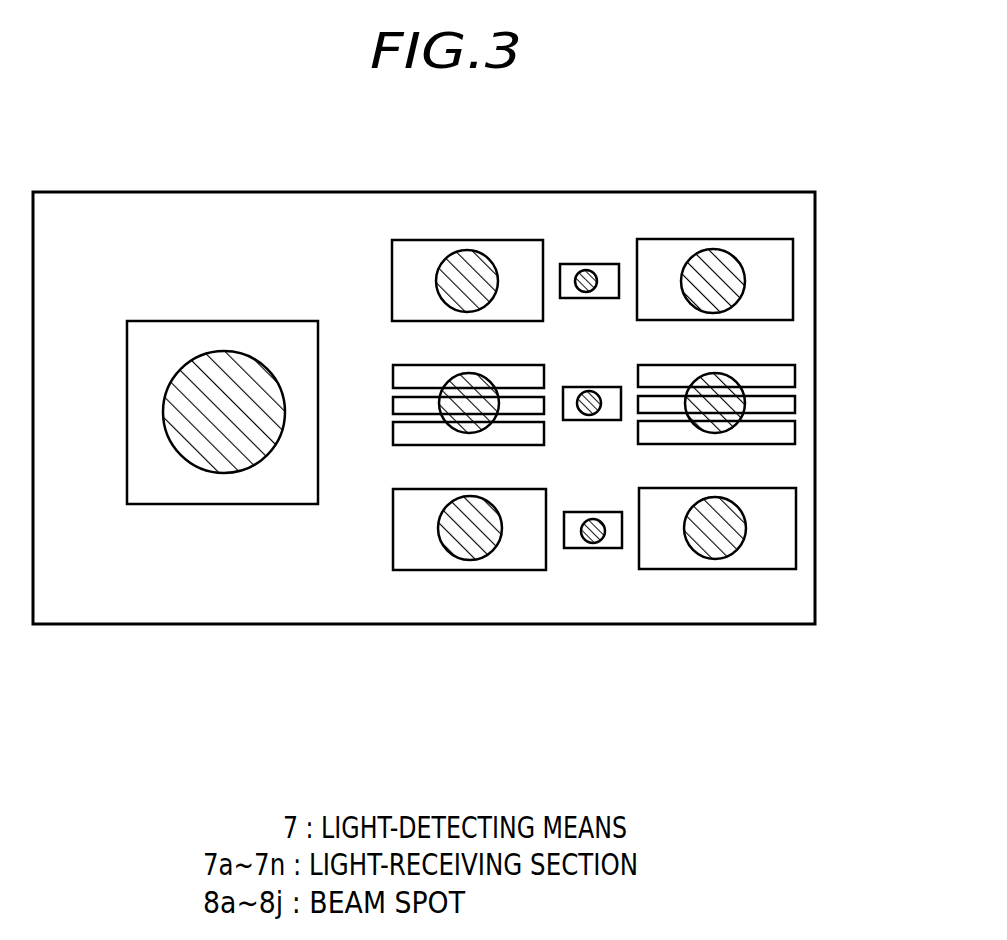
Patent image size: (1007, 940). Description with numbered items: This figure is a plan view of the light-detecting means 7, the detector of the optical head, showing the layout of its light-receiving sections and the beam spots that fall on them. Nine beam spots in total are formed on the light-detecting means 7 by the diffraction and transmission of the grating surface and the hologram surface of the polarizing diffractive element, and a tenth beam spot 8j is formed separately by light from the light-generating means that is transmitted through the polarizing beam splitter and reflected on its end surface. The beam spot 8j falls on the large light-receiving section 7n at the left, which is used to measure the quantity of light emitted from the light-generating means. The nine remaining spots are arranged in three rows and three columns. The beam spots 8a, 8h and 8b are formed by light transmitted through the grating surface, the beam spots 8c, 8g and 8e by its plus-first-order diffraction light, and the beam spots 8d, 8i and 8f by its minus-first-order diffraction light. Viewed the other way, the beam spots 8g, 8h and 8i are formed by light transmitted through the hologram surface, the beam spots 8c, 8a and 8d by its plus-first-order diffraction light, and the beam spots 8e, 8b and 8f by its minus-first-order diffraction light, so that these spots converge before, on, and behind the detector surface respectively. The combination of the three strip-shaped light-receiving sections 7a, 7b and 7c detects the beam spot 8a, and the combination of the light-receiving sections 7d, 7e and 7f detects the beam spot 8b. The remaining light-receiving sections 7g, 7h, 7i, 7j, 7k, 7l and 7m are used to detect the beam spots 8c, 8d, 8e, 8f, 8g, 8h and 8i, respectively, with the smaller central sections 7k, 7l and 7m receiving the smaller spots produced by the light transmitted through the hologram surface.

The light-detecting means 7 is at (177, 186).
The light-receiving section 7a is at (787, 373).
The light-receiving section 7b is at (787, 403).
The light-receiving section 7c is at (787, 431).
The light-receiving section 7d is at (405, 370).
The light-receiving section 7e is at (402, 403).
The light-receiving section 7f is at (402, 433).
The light-receiving section 7g is at (779, 263).
The light-receiving section 7h is at (778, 538).
The light-receiving section 7i is at (413, 262).
The light-receiving section 7j is at (412, 555).
The light-receiving section 7k is at (570, 272).
The light-receiving section 7l is at (603, 385).
The light-receiving section 7m is at (610, 542).
The light-receiving section 7n is at (146, 338).
The beam spot 8a is at (733, 428).
The beam spot 8b is at (465, 428).
The beam spot 8c is at (718, 268).
The beam spot 8d is at (730, 555).
The beam spot 8e is at (468, 268).
The beam spot 8f is at (467, 552).
The beam spot 8g is at (593, 272).
The beam spot 8h is at (588, 414).
The beam spot 8i is at (587, 542).
The beam spot 8j is at (237, 370).